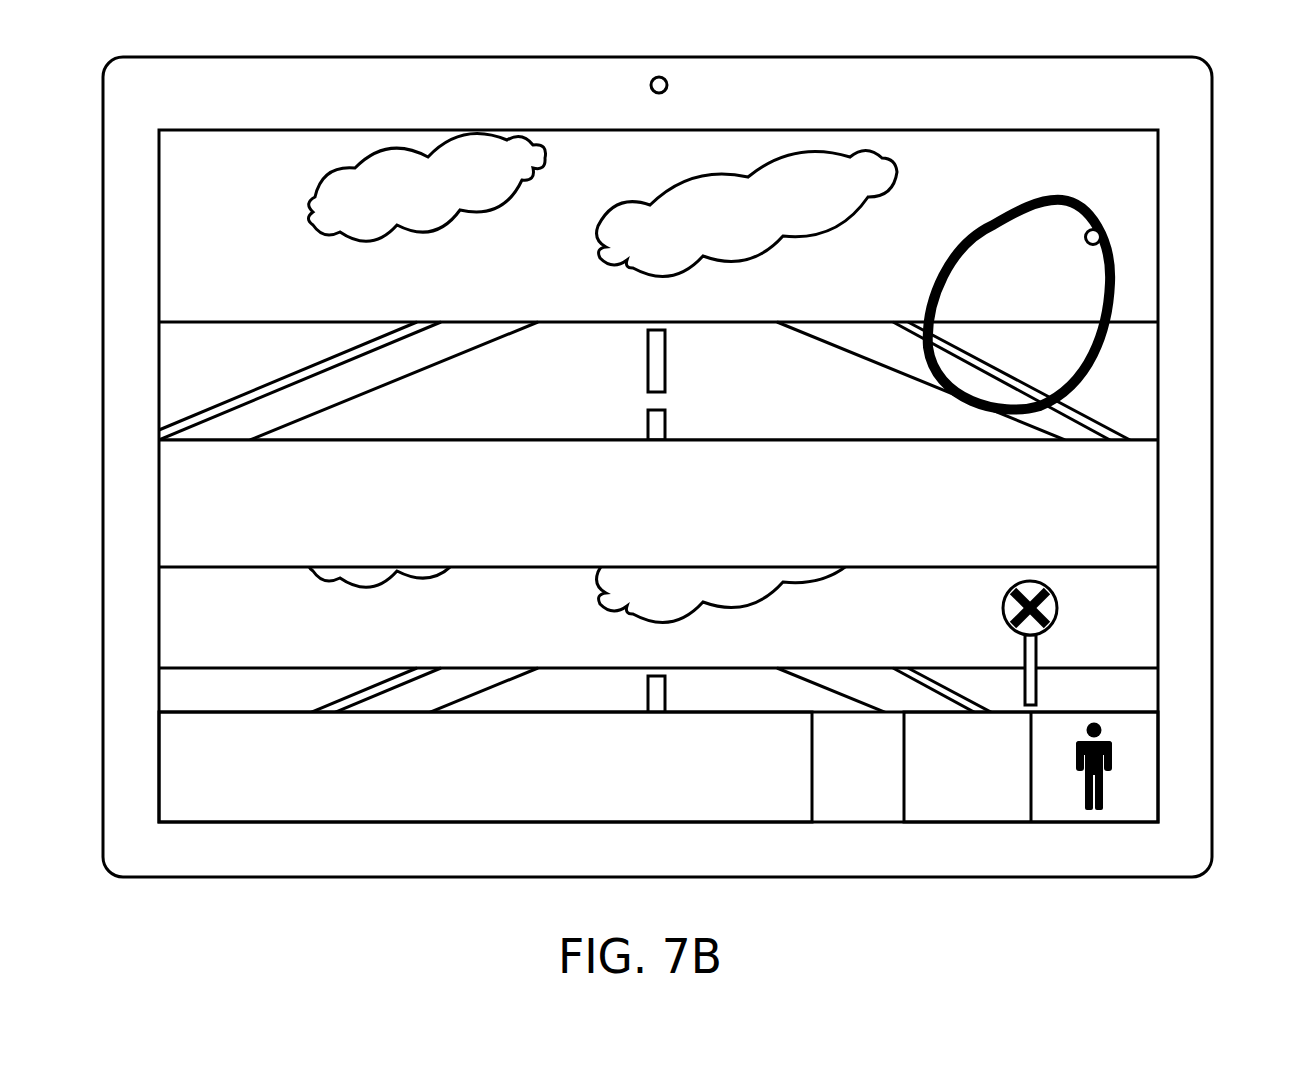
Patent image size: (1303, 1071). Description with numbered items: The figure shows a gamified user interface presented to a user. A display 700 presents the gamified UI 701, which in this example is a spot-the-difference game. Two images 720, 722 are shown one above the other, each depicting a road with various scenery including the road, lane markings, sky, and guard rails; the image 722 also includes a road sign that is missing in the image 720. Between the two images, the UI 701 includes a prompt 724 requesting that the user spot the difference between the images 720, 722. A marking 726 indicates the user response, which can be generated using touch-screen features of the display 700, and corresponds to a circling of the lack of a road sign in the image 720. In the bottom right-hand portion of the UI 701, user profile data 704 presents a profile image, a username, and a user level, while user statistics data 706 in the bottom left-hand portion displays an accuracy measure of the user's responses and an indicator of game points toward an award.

The display 700 is at (1212, 96).
The gamified UI 701 is at (1158, 165).
The user profile data 704 is at (1050, 800).
The user statistics data 706 is at (777, 800).
The image 720 is at (185, 226).
The image 722 is at (168, 609).
The prompt 724 is at (178, 495).
The marking 726 is at (1100, 370).